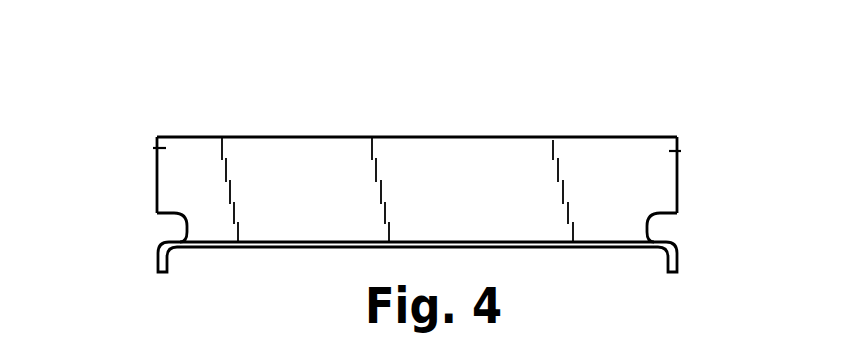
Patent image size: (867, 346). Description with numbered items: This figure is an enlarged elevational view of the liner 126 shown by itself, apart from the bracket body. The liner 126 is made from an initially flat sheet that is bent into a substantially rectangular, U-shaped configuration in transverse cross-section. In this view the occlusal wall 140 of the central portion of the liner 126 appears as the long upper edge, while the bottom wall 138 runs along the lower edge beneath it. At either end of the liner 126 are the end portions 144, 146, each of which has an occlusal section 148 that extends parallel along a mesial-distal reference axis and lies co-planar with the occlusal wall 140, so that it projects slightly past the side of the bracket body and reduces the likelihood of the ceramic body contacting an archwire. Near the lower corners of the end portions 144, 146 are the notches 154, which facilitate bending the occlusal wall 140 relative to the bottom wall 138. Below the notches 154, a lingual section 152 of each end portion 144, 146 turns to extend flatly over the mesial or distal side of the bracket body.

The liner 126 is at (447, 135).
The occlusal wall 140 is at (318, 147).
The bottom wall 138 is at (274, 248).
The end portion 144 is at (143, 146).
The end portion 146 is at (690, 145).
The occlusal section 148 is at (157, 173).
The notches 154 is at (183, 227).
The lingual section 152 is at (157, 262).